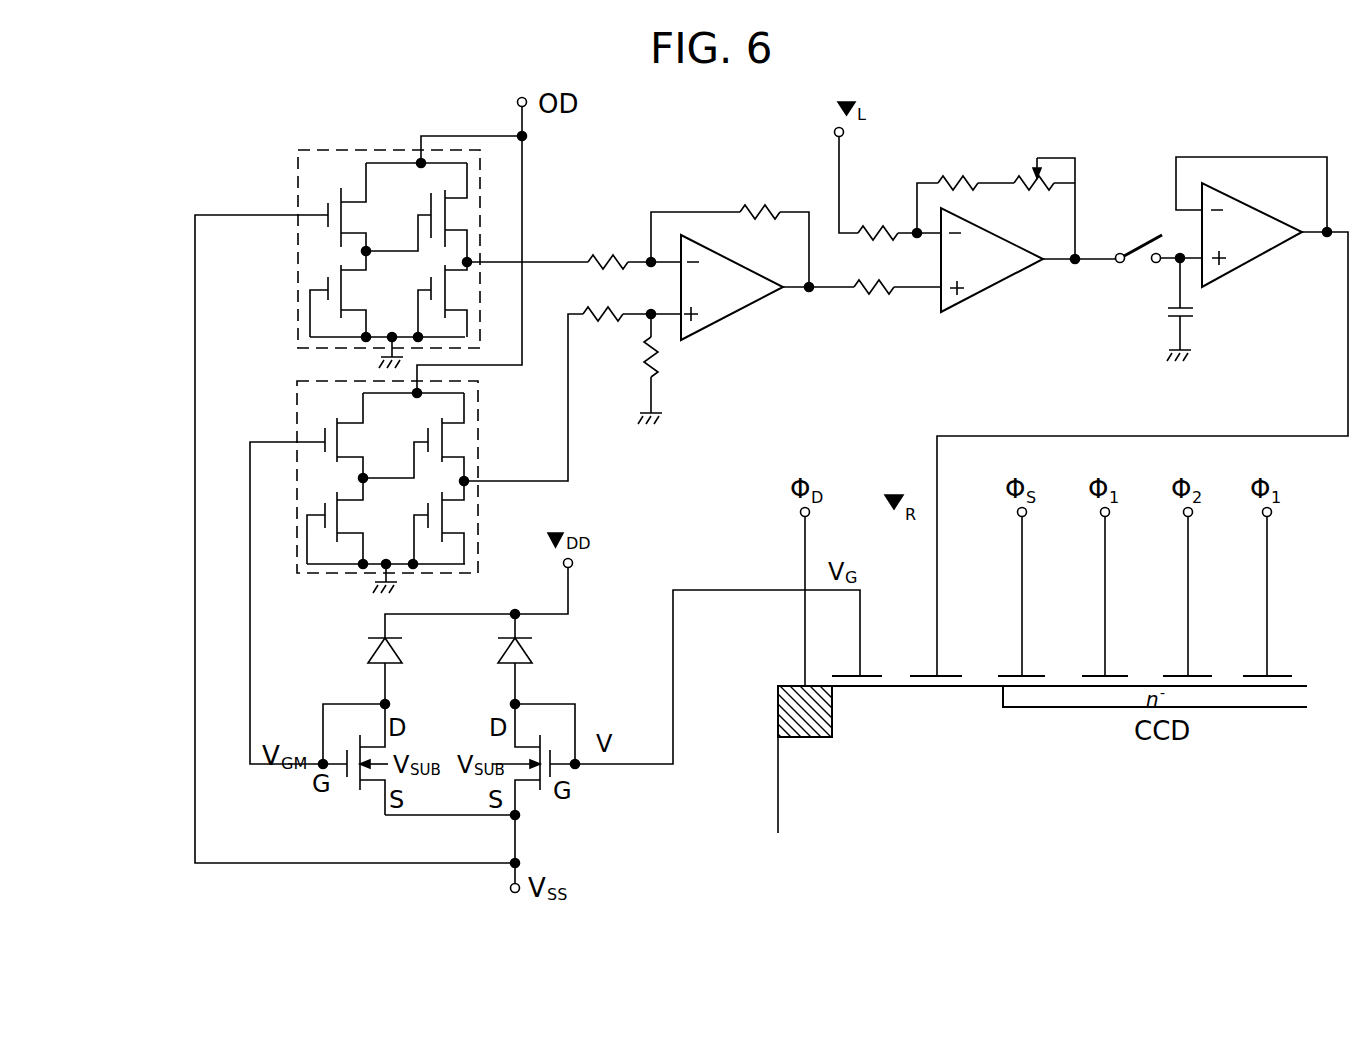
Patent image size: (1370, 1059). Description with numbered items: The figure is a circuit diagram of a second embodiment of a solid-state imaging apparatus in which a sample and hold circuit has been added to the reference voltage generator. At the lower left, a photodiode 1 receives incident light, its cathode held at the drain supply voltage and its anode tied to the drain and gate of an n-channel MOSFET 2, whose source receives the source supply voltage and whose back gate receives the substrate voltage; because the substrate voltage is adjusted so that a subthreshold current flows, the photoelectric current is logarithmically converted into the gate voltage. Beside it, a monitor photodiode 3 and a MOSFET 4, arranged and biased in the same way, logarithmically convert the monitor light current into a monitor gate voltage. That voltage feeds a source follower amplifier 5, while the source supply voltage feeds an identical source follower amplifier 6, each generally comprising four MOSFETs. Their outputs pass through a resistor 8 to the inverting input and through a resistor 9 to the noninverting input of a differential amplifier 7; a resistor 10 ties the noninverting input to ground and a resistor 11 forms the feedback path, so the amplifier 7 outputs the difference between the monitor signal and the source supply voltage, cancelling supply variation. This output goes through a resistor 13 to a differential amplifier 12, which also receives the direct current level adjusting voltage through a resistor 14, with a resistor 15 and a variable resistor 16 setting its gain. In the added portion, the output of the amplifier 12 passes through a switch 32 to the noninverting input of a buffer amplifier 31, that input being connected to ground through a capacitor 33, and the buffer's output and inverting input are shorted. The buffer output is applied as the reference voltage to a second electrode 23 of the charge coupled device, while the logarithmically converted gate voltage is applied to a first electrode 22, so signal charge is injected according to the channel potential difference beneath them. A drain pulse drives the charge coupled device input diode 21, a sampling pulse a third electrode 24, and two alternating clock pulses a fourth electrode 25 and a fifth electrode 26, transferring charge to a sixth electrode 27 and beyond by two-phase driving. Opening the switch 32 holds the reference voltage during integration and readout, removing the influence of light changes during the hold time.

The photodiode 1 is at (532, 656).
The MOSFET 2 is at (545, 787).
The monitor photodiode 3 is at (368, 657).
The MOSFET 4 is at (355, 784).
The source follower amplifier 5 is at (297, 381).
The source follower amplifier 6 is at (297, 180).
The differential amplifier 7 is at (740, 309).
The resistor 8 is at (612, 257).
The resistor 9 is at (611, 322).
The resistor 10 is at (657, 357).
The resistor 11 is at (763, 204).
The differential amplifier 12 is at (990, 297).
The resistor 13 is at (880, 296).
The resistor 14 is at (889, 199).
The resistor 15 is at (962, 159).
The variable resistor 16 is at (1018, 178).
The CCD input diode 21 is at (780, 718).
The first electrode 22 is at (868, 676).
The second electrode 23 is at (943, 676).
The third electrode 24 is at (1032, 675).
The fourth electrode 25 is at (1112, 675).
The fifth electrode 26 is at (1195, 675).
The sixth electrode 27 is at (1275, 675).
The buffer amplifier 31 is at (1262, 255).
The switch 32 is at (1136, 246).
The capacitor 33 is at (1163, 313).